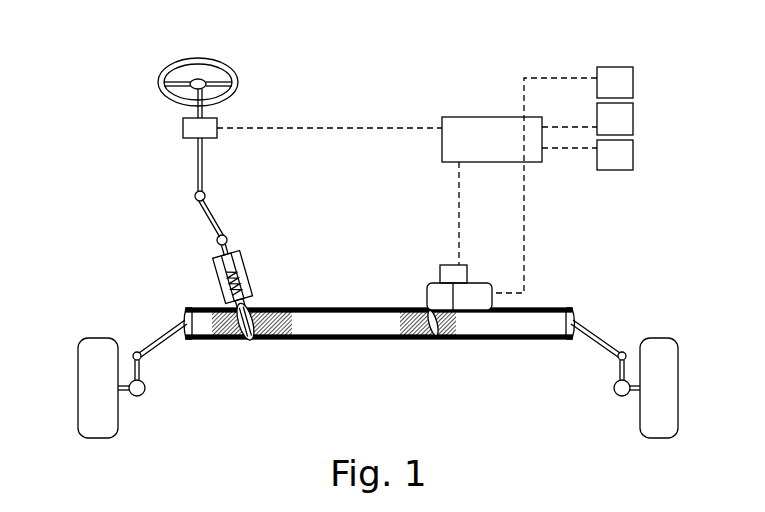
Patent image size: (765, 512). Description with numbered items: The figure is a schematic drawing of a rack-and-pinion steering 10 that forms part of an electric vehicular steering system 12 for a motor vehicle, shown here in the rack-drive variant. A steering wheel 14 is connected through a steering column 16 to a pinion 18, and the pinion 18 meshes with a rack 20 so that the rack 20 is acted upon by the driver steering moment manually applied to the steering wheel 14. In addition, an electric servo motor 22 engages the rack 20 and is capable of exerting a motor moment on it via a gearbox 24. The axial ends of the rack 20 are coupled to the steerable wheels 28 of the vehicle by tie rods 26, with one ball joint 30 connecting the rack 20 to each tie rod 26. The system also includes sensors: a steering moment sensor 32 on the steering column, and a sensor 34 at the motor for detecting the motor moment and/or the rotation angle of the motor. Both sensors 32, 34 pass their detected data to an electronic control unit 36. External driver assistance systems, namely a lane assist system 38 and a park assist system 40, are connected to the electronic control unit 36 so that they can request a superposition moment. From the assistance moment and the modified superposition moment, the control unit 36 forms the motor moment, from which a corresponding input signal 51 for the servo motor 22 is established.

The rack-and-pinion steering 10 is at (378, 219).
The electric vehicular steering system 12 is at (378, 219).
The steering wheel 14 is at (239, 83).
The steering column 16 is at (198, 167).
The pinion 18 is at (250, 340).
The rack 20 is at (350, 311).
The electric servo motor 22 is at (480, 283).
The gearbox 24 is at (428, 292).
The tie rods 26 is at (162, 342).
The steerable wheels 28 is at (100, 350).
The ball joint 30 is at (183, 318).
The steering moment sensor 32 is at (183, 128).
The sensor 34 is at (446, 265).
The electronic control unit 36 is at (492, 139).
The lane assist system 38 is at (615, 119).
The park assist system 40 is at (615, 155).
The input signal 51 is at (525, 224).